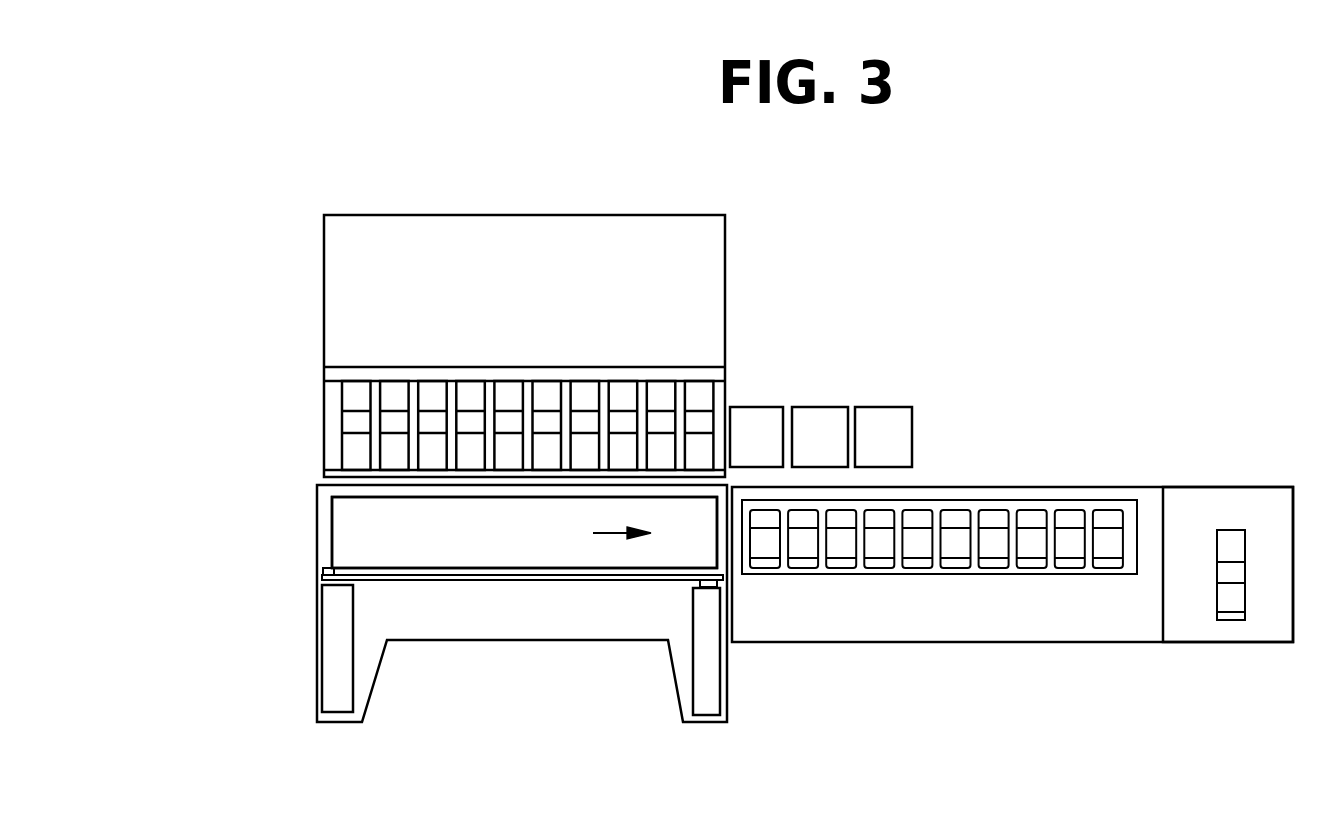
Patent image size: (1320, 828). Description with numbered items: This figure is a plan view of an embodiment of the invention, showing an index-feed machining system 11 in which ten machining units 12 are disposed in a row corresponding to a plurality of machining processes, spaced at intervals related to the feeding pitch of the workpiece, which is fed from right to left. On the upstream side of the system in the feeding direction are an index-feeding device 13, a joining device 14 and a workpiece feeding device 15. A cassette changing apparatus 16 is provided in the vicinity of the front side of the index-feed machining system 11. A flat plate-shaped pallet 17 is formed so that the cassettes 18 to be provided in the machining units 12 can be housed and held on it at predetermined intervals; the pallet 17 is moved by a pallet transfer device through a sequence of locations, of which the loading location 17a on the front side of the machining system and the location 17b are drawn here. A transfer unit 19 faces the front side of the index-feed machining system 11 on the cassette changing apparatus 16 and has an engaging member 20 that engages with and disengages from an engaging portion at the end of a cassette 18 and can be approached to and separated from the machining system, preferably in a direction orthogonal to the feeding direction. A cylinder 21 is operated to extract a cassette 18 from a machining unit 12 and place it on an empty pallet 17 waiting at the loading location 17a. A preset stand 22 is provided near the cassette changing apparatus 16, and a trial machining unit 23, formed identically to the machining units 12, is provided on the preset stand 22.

The index-feed machining system 11 is at (310, 400).
The machining unit 12 is at (662, 392).
The index-feeding device 13 is at (763, 417).
The joining device 14 is at (822, 417).
The workpiece feeding device 15 is at (885, 415).
The cassette changing apparatus 16 is at (867, 657).
The pallet 17 is at (348, 523).
The pallet location 17a is at (470, 532).
The pallet location 17b is at (1062, 500).
The cassette 18 is at (950, 517).
The transfer unit 19 is at (658, 667).
The engaging member 20 is at (325, 575).
The cylinder 21 is at (335, 672).
The preset stand 22 is at (1217, 500).
The trial machining unit 23 is at (1232, 605).